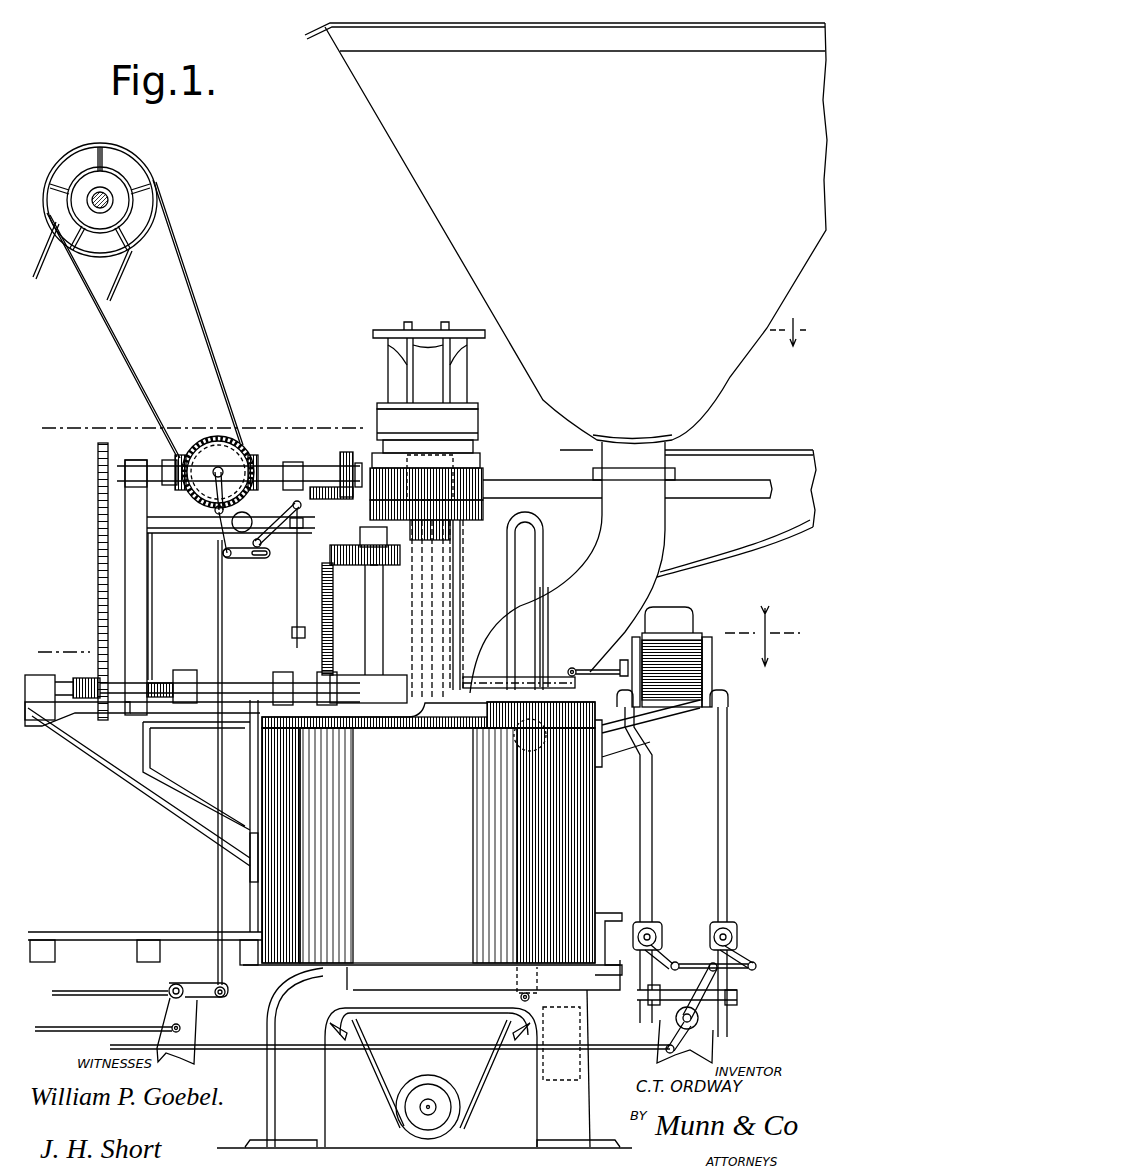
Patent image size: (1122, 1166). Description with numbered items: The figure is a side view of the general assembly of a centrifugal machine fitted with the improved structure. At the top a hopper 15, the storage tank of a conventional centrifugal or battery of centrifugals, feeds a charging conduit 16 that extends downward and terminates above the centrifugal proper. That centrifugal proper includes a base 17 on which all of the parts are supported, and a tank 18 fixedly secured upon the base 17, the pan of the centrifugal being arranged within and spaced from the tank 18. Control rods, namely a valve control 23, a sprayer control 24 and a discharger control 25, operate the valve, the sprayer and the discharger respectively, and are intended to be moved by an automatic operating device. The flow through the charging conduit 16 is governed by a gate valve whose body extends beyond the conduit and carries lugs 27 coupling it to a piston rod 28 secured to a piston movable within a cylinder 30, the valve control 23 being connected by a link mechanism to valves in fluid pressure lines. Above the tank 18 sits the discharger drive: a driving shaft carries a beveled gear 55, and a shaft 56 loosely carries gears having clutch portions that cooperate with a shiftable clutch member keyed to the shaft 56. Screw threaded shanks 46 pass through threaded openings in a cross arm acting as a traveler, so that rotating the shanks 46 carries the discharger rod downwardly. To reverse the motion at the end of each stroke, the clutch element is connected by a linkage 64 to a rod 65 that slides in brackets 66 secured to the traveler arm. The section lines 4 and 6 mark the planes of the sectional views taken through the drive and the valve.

The section line 4- 4 is at (422, 373).
The section line 6- 6 is at (425, 636).
The hopper 15 is at (566, 233).
The charging conduit 16 is at (572, 567).
The base 17 is at (308, 1103).
The tank 18 is at (471, 845).
The valve control 23 is at (243, 1043).
The sprayer control 24 is at (131, 996).
The discharger control 25 is at (217, 963).
The lugs 27 is at (572, 668).
The piston rod 28 is at (672, 657).
The cylinder 30 is at (690, 668).
The screw threaded shanks 46 is at (321, 657).
The beveled gear 55 is at (227, 447).
The shaft 56 is at (318, 477).
The linkage 64 is at (240, 558).
The rod 65 is at (296, 588).
The brackets 66 is at (278, 533).